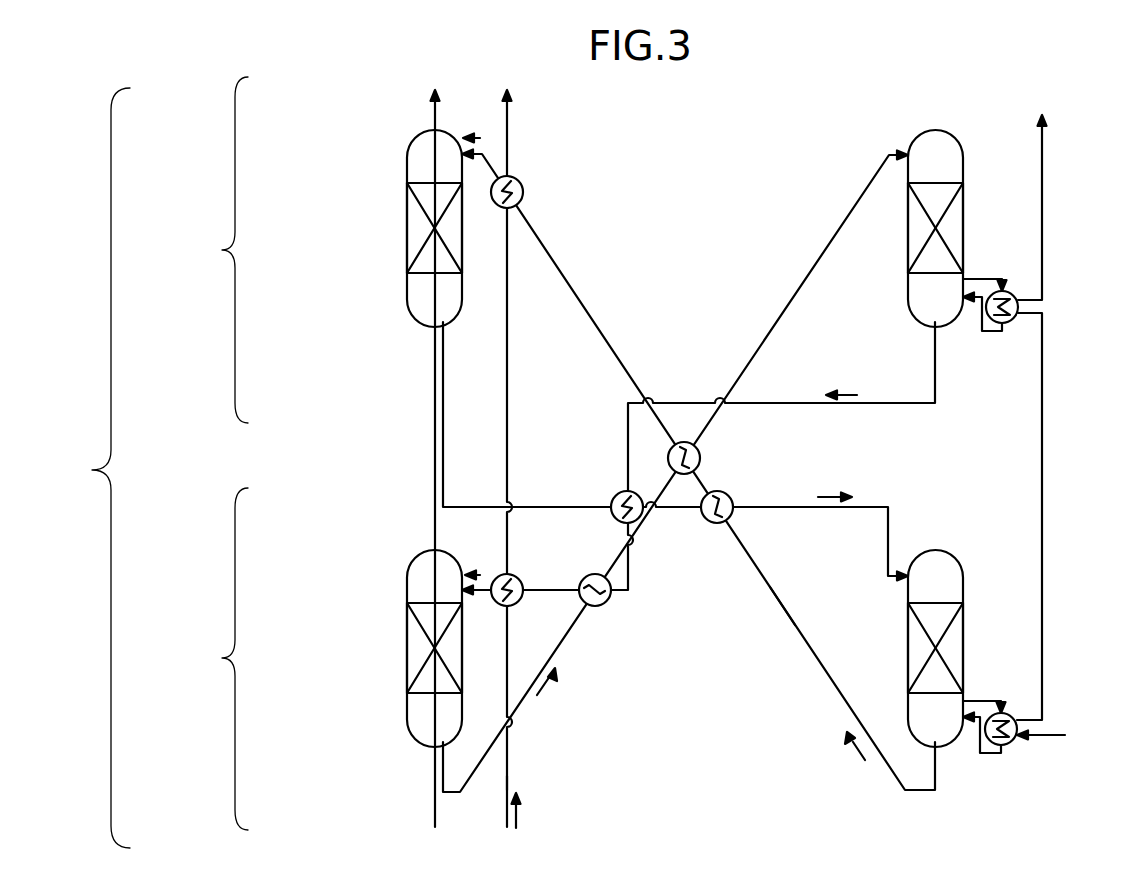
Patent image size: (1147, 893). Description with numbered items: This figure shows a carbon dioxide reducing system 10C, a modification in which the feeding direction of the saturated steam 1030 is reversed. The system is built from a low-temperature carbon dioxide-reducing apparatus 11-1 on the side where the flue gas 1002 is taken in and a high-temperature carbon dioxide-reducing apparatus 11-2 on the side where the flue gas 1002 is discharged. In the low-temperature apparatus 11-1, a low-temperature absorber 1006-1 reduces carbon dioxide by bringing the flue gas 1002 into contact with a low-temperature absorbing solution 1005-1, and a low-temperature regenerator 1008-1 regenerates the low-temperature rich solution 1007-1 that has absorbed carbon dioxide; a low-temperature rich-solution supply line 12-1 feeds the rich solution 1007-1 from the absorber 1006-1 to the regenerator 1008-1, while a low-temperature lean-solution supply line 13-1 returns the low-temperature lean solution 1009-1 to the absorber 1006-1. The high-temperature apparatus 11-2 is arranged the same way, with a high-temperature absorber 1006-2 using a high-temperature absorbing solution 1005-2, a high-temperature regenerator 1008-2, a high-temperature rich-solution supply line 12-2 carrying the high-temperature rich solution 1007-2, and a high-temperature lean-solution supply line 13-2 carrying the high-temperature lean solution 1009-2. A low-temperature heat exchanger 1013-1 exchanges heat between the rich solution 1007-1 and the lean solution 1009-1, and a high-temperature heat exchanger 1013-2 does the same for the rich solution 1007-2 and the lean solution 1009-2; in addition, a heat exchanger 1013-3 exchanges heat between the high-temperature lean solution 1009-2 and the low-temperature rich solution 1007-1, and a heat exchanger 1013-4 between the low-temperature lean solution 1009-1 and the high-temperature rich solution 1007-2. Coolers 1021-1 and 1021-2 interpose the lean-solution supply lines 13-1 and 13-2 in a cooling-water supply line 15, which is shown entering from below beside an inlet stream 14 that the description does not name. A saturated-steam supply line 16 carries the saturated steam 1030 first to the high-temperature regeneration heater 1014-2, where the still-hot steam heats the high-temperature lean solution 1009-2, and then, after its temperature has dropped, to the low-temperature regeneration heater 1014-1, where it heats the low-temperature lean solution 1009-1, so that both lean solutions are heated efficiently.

The CO2 reducing system 10C is at (93, 468).
The low-temperature CO2-reducing apparatus 11-1 is at (215, 659).
The high-temperature CO2-reducing apparatus 11-2 is at (215, 250).
The flue gas 1002 is at (420, 474).
The feed stream 14 is at (516, 828).
The cooling-water supply line 15 is at (508, 776).
The low-temperature rich-solution supply line 12-1 is at (855, 190).
The high-temperature rich-solution supply line 12-2 is at (443, 392).
The low-temperature lean-solution supply line 13-1 is at (850, 404).
The high-temperature lean-solution supply line 13-2 is at (783, 607).
The saturated-steam supply line 16 is at (1042, 262).
The saturated steam 1030 is at (1064, 735).
The low-temperature absorbing solution 1005-1 is at (480, 575).
The high-temperature absorbing solution 1005-2 is at (480, 138).
The low-temperature absorber 1006-1 is at (407, 585).
The high-temperature absorber 1006-2 is at (407, 168).
The low-temperature rich solution 1007-1 is at (538, 694).
The high-temperature rich solution 1007-2 is at (830, 497).
The low-temperature regenerator 1008-1 is at (955, 138).
The high-temperature regenerator 1008-2 is at (955, 560).
The low-temperature lean solution 1009-1 is at (842, 395).
The high-temperature lean solution 1009-2 is at (863, 758).
The low-temperature heat exchanger 1013-1 is at (602, 606).
The high-temperature heat exchanger 1013-2 is at (710, 524).
The heat exchanger 1013-3 is at (669, 458).
The heat exchanger 1013-4 is at (616, 494).
The low-temperature regeneration heater 1014-1 is at (1012, 322).
The high-temperature regeneration heater 1014-2 is at (1010, 745).
The cooler 1021-1 is at (519, 577).
The cooler 1021-2 is at (518, 180).